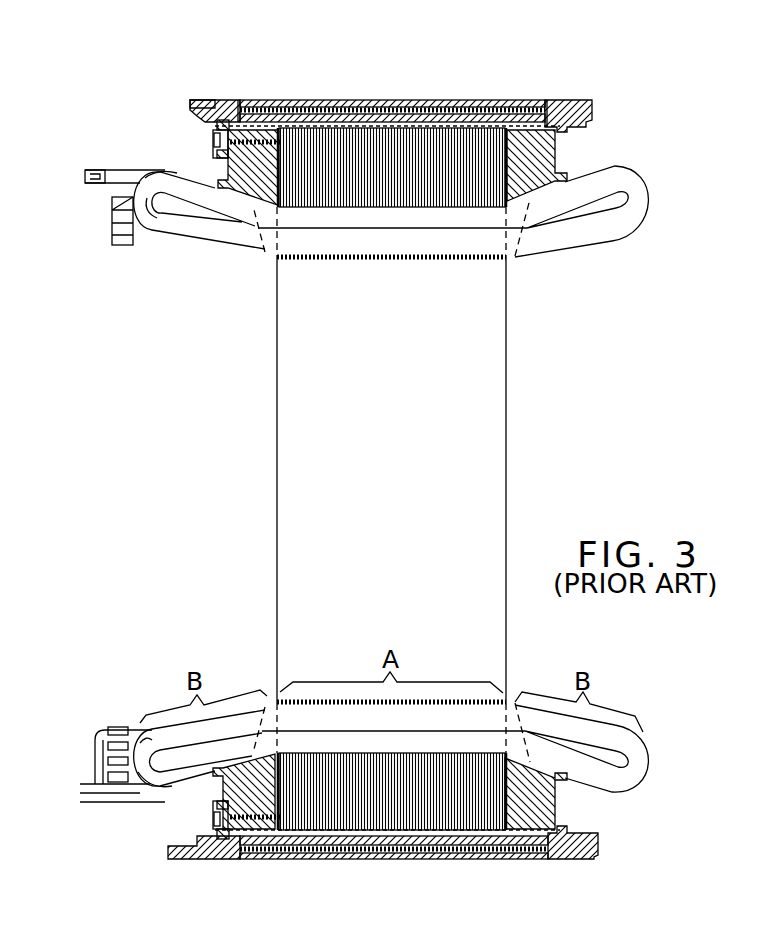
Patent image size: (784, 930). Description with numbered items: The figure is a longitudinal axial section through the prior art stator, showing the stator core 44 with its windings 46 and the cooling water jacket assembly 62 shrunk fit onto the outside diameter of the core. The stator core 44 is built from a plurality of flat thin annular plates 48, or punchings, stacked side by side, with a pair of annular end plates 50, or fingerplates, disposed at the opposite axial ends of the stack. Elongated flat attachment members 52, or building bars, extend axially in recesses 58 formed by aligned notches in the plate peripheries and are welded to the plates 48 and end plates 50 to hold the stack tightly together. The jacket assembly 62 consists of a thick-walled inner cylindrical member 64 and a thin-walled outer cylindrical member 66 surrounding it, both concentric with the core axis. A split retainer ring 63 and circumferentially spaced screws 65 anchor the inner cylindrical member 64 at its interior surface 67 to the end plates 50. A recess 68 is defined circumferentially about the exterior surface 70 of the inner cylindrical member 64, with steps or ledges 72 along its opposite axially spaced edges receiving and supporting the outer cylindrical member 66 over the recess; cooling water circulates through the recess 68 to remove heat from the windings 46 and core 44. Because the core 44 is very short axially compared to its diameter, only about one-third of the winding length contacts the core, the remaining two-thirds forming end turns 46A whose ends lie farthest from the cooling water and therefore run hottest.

The stator core 44 is at (412, 866).
The windings 46 is at (648, 747).
The winding end turns 46A is at (155, 723).
The flat thin annular plates 48 is at (410, 803).
The annular end plates 50 is at (553, 805).
The elongated flat attachment members 52 is at (277, 858).
The axial-extending recesses 58 is at (578, 101).
The cooling water jacket assembly 62 is at (381, 81).
The split retainer ring 63 is at (213, 155).
The inner cylindrical member 64 is at (190, 103).
The screws 65 is at (212, 820).
The outer cylindrical member 66 is at (332, 101).
The interior surface 67 is at (315, 845).
The recess 68 is at (398, 100).
The exterior surface 70 is at (208, 98).
The steps or ledges 72 is at (243, 101).